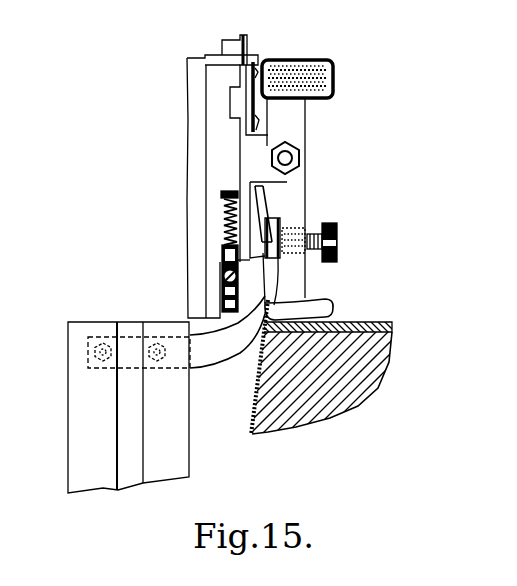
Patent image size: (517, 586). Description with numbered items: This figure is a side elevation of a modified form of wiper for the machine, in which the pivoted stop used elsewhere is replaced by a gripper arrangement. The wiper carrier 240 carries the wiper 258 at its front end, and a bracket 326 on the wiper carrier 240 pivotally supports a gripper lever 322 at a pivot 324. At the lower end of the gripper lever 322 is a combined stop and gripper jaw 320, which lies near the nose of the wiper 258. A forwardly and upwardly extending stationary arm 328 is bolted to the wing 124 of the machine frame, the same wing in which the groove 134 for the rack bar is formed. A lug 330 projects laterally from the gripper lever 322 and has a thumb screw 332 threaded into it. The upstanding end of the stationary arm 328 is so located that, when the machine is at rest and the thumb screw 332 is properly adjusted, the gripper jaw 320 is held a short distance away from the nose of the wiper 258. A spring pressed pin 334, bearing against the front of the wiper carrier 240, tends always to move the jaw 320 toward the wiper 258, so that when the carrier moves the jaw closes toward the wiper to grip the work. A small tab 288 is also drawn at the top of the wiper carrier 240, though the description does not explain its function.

The wing 124 is at (129, 407).
The groove 134 is at (133, 473).
The wiper carrier 240 is at (193, 155).
The wiper 258 is at (262, 303).
The tab 288 is at (223, 45).
The combined stop and gripper jaw 320 is at (307, 307).
The gripper lever 322 is at (292, 198).
The pivot 324 is at (294, 158).
The bracket 326 is at (250, 165).
The stationary arm 328 is at (221, 352).
The lug 330 is at (300, 228).
The thumb screw 332 is at (338, 240).
The spring pressed pin 334 is at (277, 62).